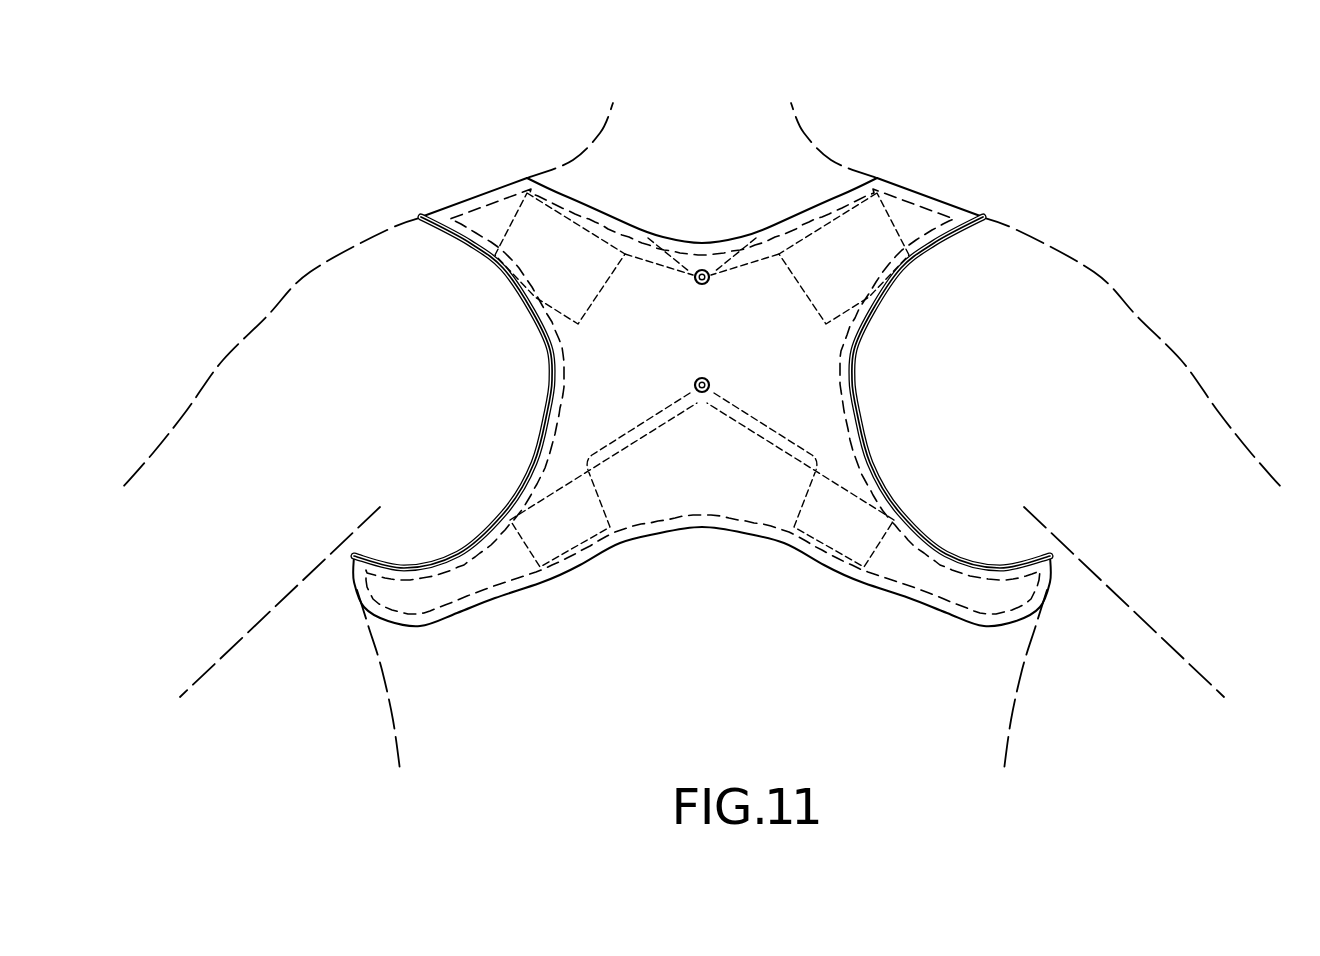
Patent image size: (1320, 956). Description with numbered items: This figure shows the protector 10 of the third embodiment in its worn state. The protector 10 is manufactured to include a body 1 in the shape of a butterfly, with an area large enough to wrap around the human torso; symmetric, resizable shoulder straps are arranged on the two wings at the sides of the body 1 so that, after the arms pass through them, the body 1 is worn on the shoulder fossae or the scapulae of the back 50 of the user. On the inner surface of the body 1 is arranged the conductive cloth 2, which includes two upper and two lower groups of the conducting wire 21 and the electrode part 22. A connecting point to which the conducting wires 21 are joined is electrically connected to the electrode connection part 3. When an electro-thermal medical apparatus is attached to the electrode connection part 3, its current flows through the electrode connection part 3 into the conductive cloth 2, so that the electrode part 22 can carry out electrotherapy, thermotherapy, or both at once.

The body 1 is at (914, 191).
The protector 10 is at (971, 207).
The conductive cloth 2 is at (511, 223).
The conducting wire 21 is at (670, 260).
The electrode part 22 is at (567, 240).
The electrode connection part 3 is at (702, 268).
The back 50 is at (812, 178).